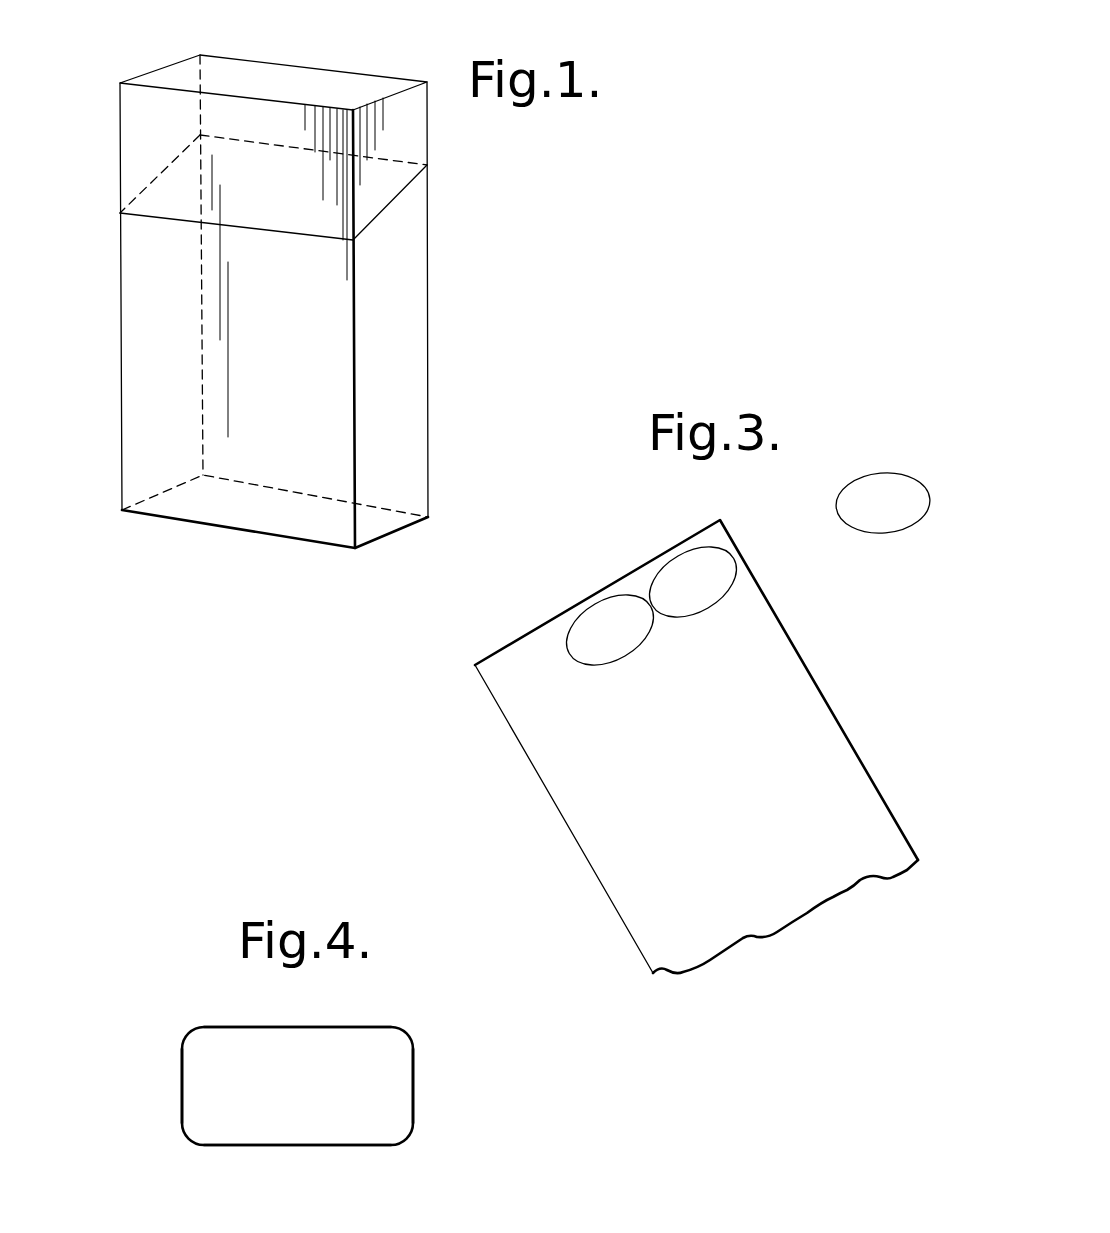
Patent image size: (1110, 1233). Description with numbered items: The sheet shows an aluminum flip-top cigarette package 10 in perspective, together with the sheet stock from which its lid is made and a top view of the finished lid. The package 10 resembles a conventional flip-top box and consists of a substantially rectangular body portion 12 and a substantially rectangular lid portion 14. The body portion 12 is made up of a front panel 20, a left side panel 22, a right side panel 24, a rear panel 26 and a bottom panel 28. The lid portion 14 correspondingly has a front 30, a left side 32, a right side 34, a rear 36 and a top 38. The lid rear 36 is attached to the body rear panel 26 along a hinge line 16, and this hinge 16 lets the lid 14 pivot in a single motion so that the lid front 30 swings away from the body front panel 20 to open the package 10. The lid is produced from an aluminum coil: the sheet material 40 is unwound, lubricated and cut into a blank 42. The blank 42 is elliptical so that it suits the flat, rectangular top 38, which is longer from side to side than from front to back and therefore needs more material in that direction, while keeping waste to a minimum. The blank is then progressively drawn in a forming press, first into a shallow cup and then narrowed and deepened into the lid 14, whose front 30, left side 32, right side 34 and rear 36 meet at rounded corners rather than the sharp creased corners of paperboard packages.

In FIG. 1, the flip-top cigarette package 10 is at (100, 172).
In FIG. 1, the body portion 12 is at (122, 380).
In FIG. 1, the lid portion 14 is at (431, 125).
In FIG. 4, the lid portion 14 is at (262, 1152).
In FIG. 1, the hinge line 16 is at (277, 142).
In FIG. 1, the front panel 20 is at (254, 374).
In FIG. 1, the left side panel 22 is at (160, 288).
In FIG. 1, the right side panel 24 is at (400, 307).
In FIG. 1, the rear panel 26 is at (390, 432).
In FIG. 1, the bottom panel 28 is at (281, 520).
In FIG. 1, the front 30 is at (247, 196).
In FIG. 4, the front 30 is at (310, 1146).
In FIG. 1, the left side 32 is at (173, 125).
In FIG. 4, the left side 32 is at (182, 1077).
In FIG. 1, the right side 34 is at (385, 172).
In FIG. 4, the right side 34 is at (413, 1106).
In FIG. 1, the rear 36 is at (345, 95).
In FIG. 4, the rear 36 is at (320, 1027).
In FIG. 1, the top 38 is at (272, 83).
In FIG. 4, the top 38 is at (277, 1070).
In FIG. 3, the sheet material 40 is at (623, 825).
In FIG. 3, the blank 42 is at (864, 532).